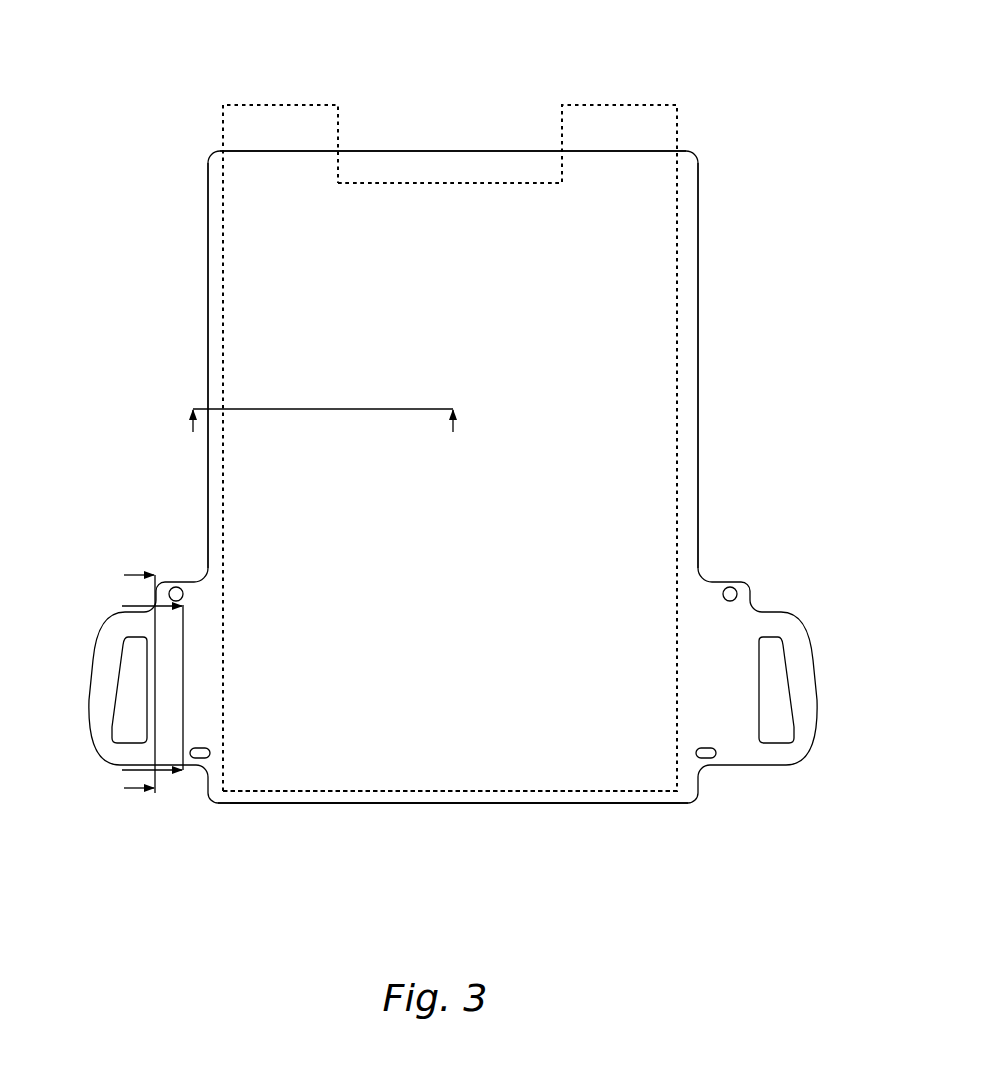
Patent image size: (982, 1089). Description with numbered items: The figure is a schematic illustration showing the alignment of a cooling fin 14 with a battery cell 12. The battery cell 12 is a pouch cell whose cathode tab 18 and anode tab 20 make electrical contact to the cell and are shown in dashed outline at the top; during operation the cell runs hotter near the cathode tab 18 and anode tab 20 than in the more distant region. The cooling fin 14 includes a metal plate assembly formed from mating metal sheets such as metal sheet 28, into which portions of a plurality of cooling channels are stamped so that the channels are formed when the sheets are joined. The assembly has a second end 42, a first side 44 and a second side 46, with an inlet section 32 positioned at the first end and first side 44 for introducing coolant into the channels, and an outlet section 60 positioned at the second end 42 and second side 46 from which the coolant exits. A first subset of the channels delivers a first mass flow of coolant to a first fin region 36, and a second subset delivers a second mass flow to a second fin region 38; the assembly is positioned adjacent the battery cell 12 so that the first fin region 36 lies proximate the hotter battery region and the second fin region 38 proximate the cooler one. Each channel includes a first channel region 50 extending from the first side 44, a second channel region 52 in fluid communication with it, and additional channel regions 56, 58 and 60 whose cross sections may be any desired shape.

The battery cell 12 is at (436, 457).
The cooling fin 14 is at (701, 164).
The cathode tab 18 is at (292, 118).
The anode tab 20 is at (593, 127).
The metal sheet 28 is at (560, 738).
The inlet section 32 is at (128, 668).
The first fin region 36 is at (289, 295).
The second fin region 38 is at (568, 519).
The second end 42 is at (427, 150).
The first side 44 is at (207, 328).
The second side 46 is at (698, 300).
The first channel region 50 is at (159, 808).
The second channel region 52 is at (179, 808).
The channel region 56 is at (688, 817).
The channel region 58 is at (725, 779).
The outlet section 60 is at (780, 660).